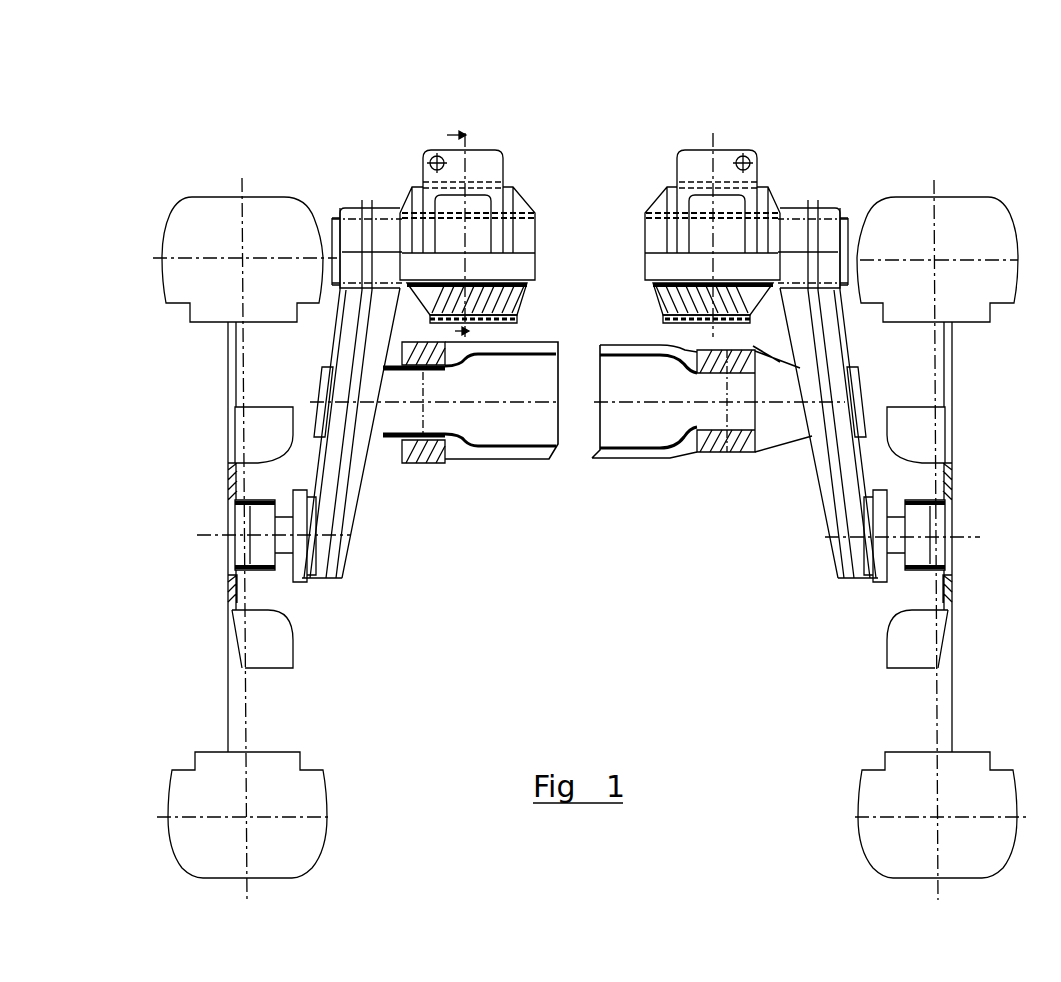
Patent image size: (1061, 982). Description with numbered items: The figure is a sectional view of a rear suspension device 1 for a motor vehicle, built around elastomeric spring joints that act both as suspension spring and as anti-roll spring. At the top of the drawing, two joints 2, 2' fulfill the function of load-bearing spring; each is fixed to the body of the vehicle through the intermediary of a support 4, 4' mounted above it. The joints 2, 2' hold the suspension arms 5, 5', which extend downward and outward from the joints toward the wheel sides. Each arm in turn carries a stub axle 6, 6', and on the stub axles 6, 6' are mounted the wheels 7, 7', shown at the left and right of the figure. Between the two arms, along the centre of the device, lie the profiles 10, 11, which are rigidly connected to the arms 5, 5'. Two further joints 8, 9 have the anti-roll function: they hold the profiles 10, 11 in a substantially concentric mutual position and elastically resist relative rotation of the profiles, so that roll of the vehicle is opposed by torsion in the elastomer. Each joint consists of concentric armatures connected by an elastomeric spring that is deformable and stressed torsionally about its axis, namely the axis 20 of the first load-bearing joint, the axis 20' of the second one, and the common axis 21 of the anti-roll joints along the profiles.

The rear suspension device 1 is at (345, 137).
The joint 2 is at (468, 188).
The joint 2' is at (730, 193).
The support 4 is at (465, 168).
The support 4' is at (717, 166).
The suspension arm 5 is at (280, 389).
The suspension arm 5' is at (916, 389).
The stub axle 6 is at (305, 537).
The stub axle 6' is at (877, 537).
The wheel 7 is at (313, 695).
The wheel 7' is at (874, 703).
The joint 8 is at (435, 463).
The joint 9 is at (747, 452).
The profile 10 is at (675, 440).
The profile 11 is at (528, 462).
The axis 20 is at (490, 243).
The axis 20' is at (688, 244).
The axis 21 is at (506, 402).